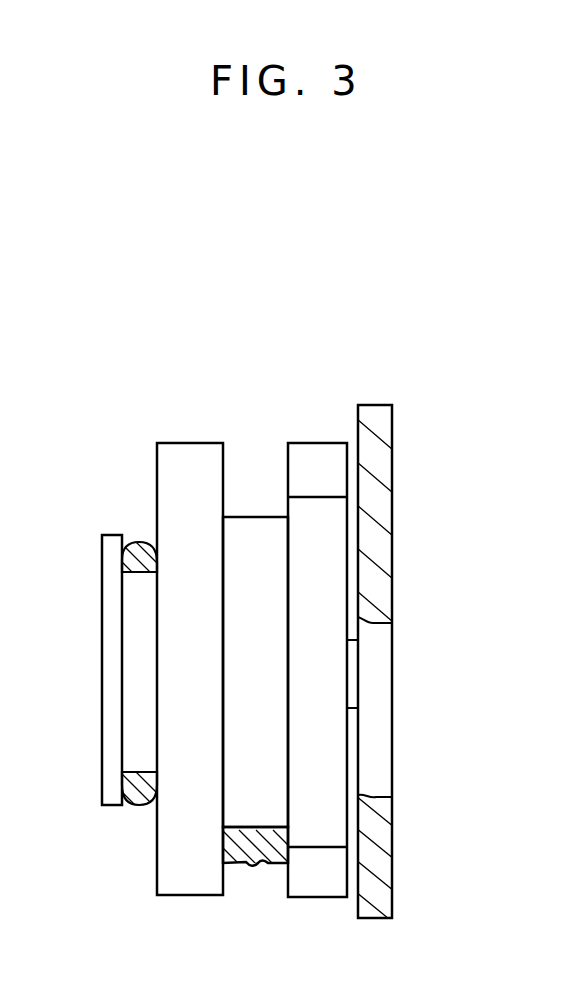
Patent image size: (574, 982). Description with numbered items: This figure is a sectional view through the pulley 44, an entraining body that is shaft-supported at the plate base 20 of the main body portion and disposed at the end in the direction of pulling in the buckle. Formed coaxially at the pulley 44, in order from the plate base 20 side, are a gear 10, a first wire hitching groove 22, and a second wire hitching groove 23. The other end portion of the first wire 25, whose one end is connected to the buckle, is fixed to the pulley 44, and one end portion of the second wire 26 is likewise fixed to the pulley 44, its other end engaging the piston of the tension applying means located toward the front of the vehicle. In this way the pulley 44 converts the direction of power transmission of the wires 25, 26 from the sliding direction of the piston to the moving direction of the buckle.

The gear 10 is at (320, 898).
The plate base 20 is at (394, 405).
The first wire hitching groove 22 is at (252, 527).
The second wire hitching groove 23 is at (132, 664).
The first wire 25 is at (243, 865).
The second wire 26 is at (136, 547).
The pulley 44 is at (210, 426).